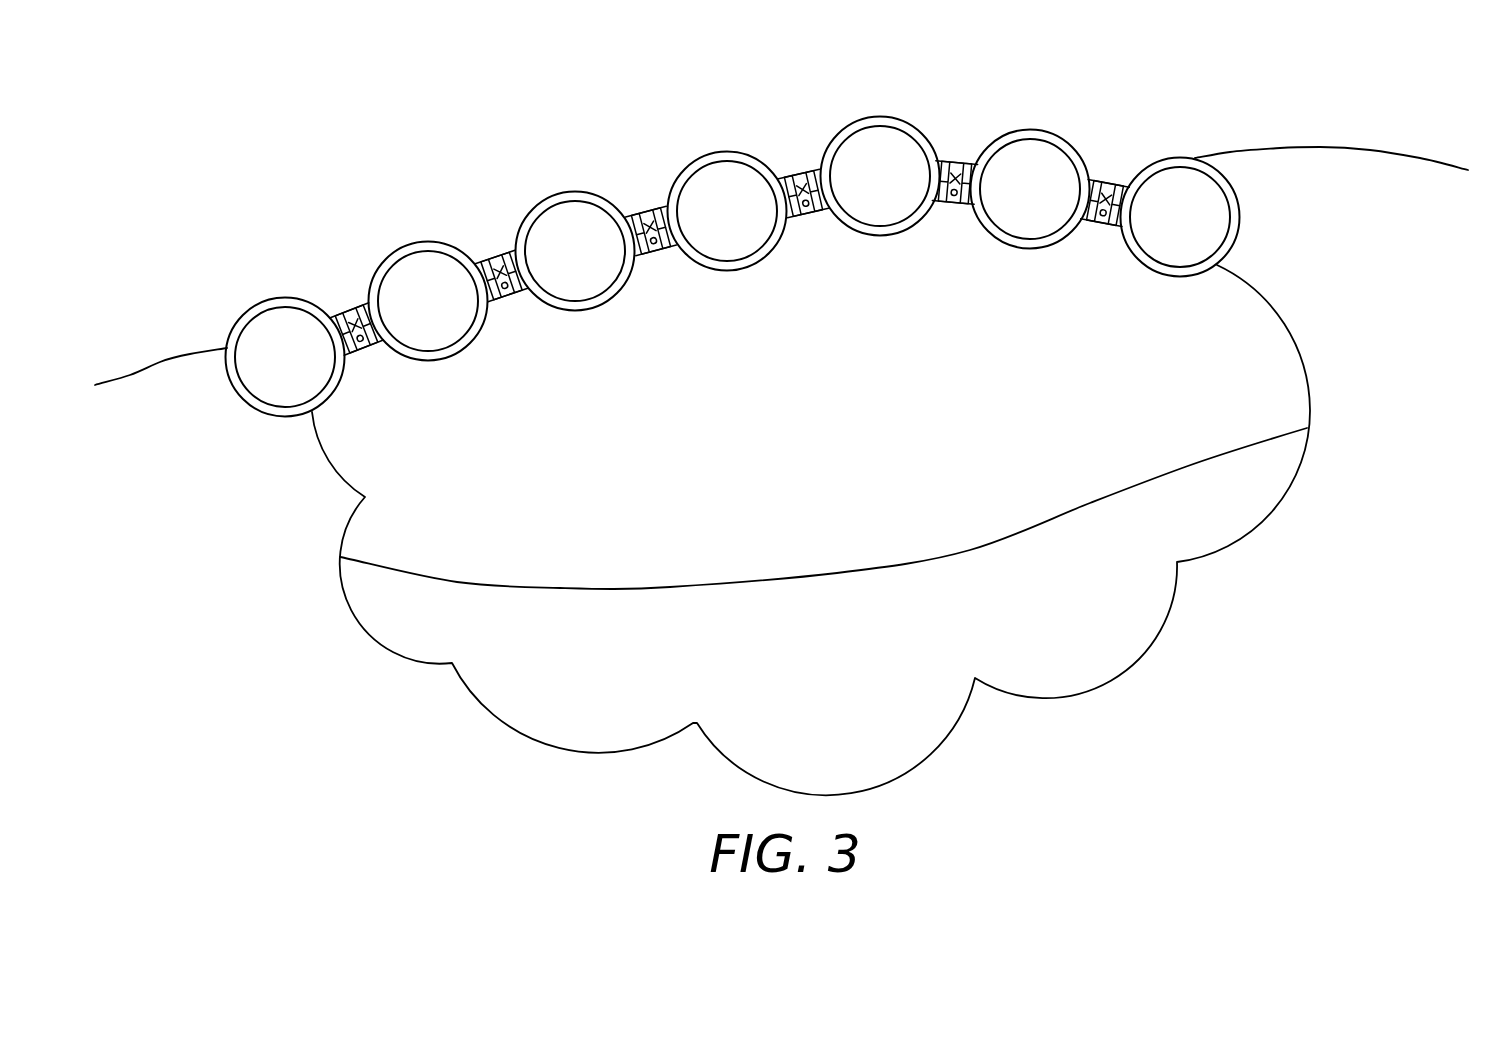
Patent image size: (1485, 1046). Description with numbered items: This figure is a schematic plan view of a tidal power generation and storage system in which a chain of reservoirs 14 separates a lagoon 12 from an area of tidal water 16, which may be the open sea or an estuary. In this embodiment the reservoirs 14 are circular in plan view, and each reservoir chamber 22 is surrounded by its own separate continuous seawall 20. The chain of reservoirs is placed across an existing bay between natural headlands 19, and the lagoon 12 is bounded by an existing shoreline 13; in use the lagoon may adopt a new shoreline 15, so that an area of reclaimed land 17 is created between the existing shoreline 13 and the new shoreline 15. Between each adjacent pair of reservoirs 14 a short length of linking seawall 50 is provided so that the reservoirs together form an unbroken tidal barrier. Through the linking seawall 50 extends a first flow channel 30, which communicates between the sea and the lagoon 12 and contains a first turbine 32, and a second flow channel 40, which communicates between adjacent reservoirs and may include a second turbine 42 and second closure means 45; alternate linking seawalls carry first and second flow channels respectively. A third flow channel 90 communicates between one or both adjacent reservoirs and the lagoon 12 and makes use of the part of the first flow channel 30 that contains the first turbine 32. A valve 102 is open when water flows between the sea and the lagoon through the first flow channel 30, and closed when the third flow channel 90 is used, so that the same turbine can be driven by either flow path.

The lagoon 12 is at (812, 530).
The existing shoreline 13 is at (1265, 517).
The reservoirs 14 is at (733, 267).
The new shoreline 15 is at (1185, 467).
The area of tidal water 16 is at (487, 123).
The reclaimed land 17 is at (1060, 598).
The natural headlands 19 is at (162, 362).
The continuous seawall 20 is at (733, 235).
The reservoir chamber 22 is at (1178, 119).
The first flow channel 30 is at (730, 253).
The first turbine 32 is at (730, 253).
The second flow channel 40 is at (730, 244).
The second turbine 42 is at (730, 244).
The second closure means 45 is at (498, 305).
The linking seawall 50 is at (725, 253).
The third flow channel 90 is at (730, 244).
The valve 102 is at (730, 244).